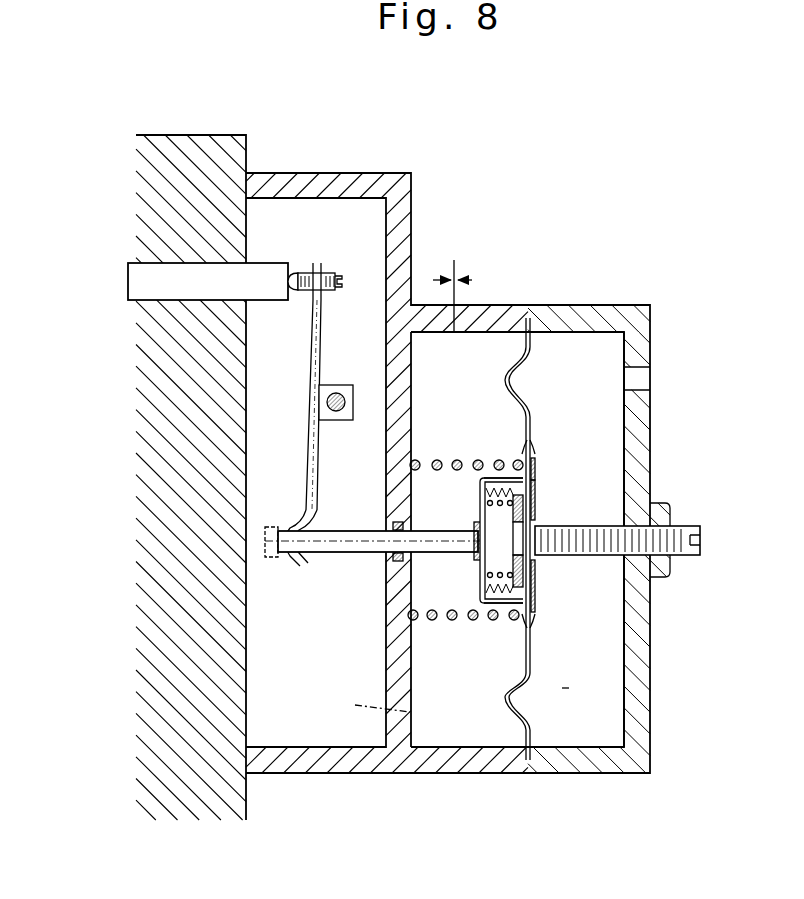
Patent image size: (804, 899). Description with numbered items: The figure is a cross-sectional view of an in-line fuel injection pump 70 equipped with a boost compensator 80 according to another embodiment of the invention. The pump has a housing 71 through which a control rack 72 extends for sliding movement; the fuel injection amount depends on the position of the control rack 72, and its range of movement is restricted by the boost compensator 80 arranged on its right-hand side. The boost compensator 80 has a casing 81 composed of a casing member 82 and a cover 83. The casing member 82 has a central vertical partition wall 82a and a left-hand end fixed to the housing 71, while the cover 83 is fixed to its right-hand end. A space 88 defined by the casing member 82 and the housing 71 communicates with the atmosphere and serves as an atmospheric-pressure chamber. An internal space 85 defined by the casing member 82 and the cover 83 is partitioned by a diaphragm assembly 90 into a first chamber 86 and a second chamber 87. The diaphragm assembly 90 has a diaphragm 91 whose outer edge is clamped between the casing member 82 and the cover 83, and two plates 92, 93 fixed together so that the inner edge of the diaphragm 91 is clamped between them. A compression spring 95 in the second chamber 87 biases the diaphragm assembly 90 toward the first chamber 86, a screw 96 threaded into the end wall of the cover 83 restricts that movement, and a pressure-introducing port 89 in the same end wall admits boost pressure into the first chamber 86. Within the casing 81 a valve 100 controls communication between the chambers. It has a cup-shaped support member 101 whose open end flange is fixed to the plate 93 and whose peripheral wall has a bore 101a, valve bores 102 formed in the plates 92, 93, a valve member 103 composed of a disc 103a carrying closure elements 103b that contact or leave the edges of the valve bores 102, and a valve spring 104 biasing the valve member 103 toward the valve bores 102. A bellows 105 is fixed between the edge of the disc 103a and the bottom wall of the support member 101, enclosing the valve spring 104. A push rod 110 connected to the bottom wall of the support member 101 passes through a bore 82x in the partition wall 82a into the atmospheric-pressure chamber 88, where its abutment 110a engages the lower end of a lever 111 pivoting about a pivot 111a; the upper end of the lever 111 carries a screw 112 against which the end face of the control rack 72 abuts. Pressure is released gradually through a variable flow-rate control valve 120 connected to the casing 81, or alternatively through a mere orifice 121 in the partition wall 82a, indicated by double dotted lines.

The in-line fuel injection pump 70 is at (198, 439).
The housing 71 is at (184, 135).
The control rack 72 is at (134, 268).
The boost compensator 80 is at (554, 530).
The casing 81 is at (554, 536).
The casing member 82 is at (448, 491).
The partition wall 82a is at (408, 412).
The bore 82x is at (392, 548).
The cover 83 is at (651, 428).
The internal space 85 is at (590, 722).
The first chamber 86 is at (610, 650).
The second chamber 87 is at (472, 728).
The space 88 is at (332, 730).
The pressure-introducing port 89 is at (636, 373).
The diaphragm assembly 90 is at (544, 397).
The diaphragm 91 is at (540, 514).
The plate 92 is at (535, 477).
The plate 93 is at (522, 452).
The compression spring 95 is at (452, 621).
The screw 96 is at (692, 526).
The valve 100 is at (470, 540).
The cup-shaped support member 101 is at (467, 540).
The bore 101a is at (497, 477).
The valve bores 102 is at (533, 512).
The valve member 103 is at (470, 550).
The disc 103a is at (531, 564).
The closure elements 103b is at (531, 588).
The valve spring 104 is at (496, 462).
The bellows 105 is at (500, 604).
The push rod 110 is at (343, 555).
The abutment 110a is at (283, 561).
The lever 111 is at (309, 436).
The pivot 111a is at (336, 394).
The screw 112 is at (333, 273).
The variable flow-rate control valve 120 is at (460, 281).
The orifice 121 is at (364, 708).